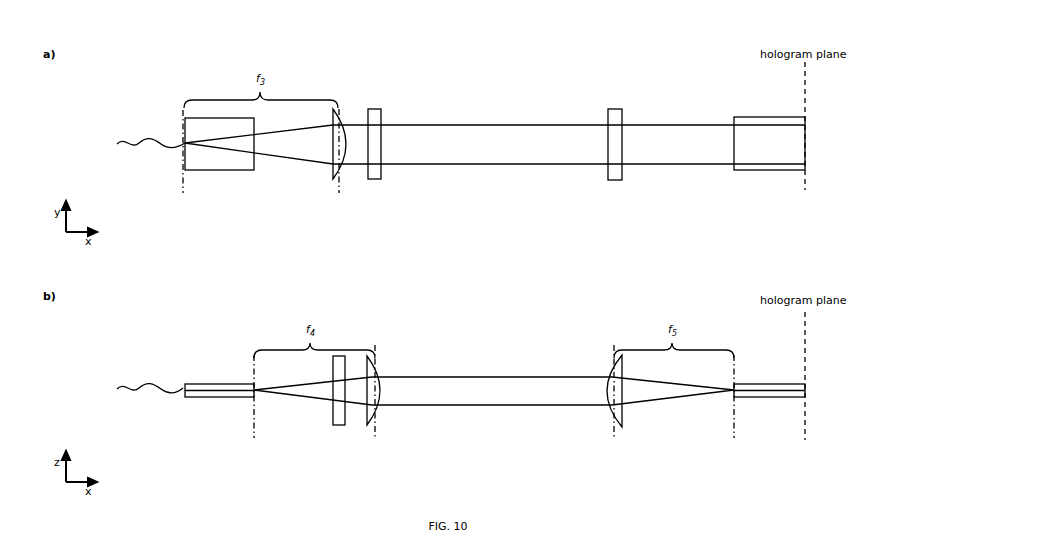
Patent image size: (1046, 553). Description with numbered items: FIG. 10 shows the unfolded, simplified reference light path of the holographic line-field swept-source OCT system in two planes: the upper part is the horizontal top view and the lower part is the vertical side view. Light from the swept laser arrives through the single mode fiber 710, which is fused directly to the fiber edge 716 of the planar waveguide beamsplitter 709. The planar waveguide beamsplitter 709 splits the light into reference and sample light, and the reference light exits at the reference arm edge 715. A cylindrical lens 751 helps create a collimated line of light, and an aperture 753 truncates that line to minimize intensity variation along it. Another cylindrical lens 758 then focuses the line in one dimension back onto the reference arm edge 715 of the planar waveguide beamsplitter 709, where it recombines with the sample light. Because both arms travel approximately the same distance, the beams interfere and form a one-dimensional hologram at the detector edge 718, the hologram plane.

The single mode fiber 710 is at (133, 148).
The planar waveguide beamsplitter 709 is at (223, 178).
The fiber edge 716 is at (182, 166).
The reference arm edge 715 is at (254, 170).
The cylindrical lens 751 is at (339, 193).
The aperture 753 is at (375, 190).
The cylindrical lens 758 is at (616, 192).
The detector edge 718 is at (807, 163).